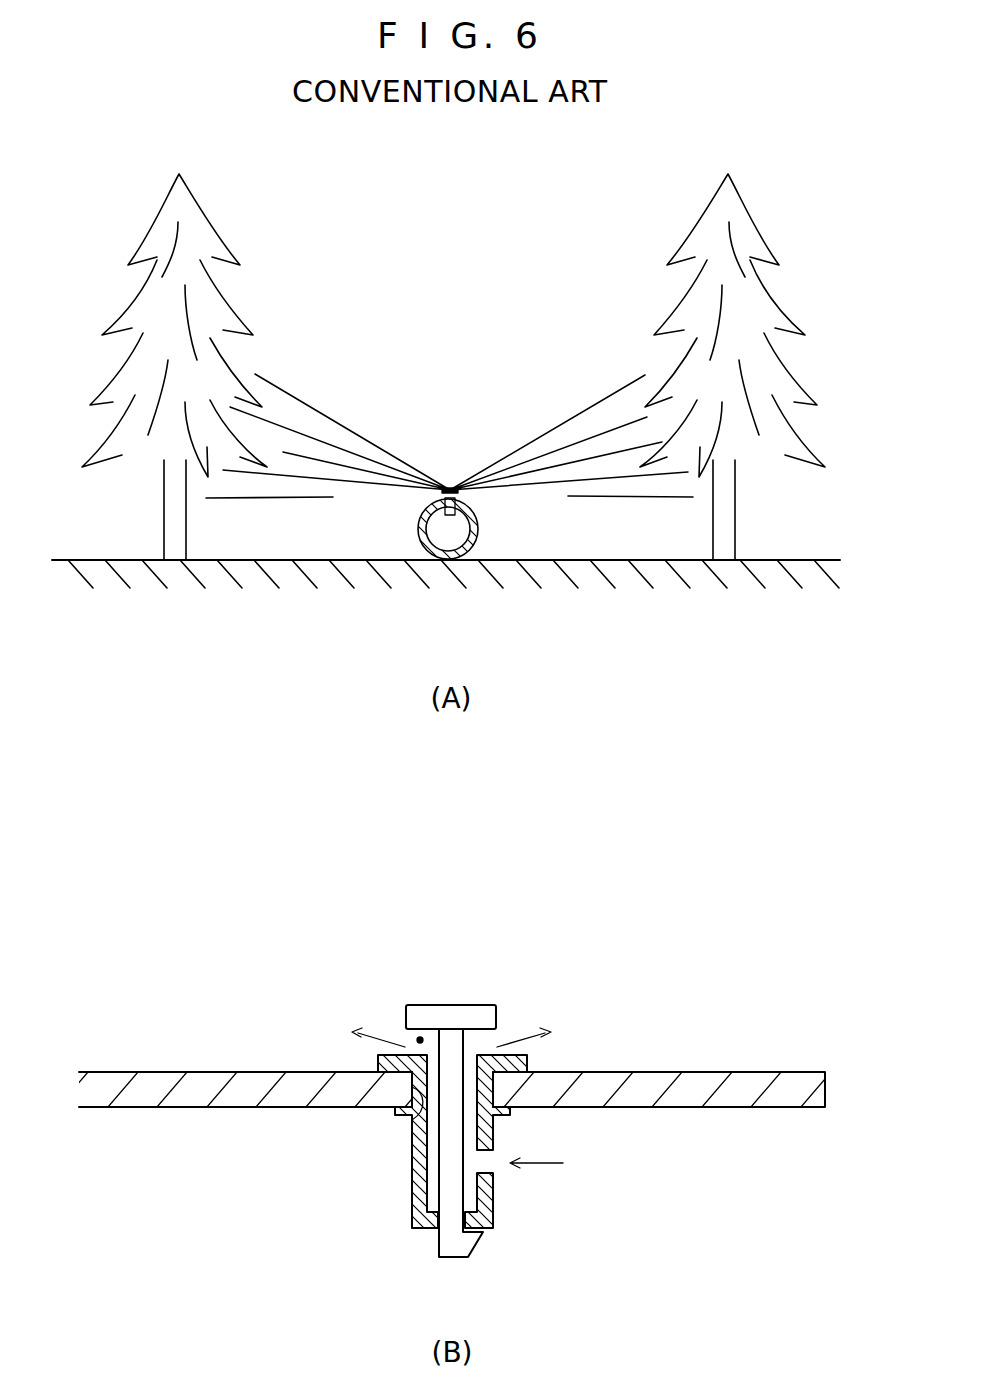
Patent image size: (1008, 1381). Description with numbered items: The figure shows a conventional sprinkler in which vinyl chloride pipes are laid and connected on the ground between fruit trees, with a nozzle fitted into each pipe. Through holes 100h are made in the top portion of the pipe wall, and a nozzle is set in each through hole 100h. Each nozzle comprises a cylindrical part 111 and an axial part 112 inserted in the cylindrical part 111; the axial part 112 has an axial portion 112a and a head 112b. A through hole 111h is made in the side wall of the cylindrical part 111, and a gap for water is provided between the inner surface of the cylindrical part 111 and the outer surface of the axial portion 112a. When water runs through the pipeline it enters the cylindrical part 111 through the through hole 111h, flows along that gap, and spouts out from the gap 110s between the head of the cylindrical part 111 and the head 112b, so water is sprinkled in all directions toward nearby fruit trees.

The through hole 100h is at (427, 1120).
The gap 110s is at (418, 1039).
The cylindrical part 111 is at (518, 1062).
The through hole 111h is at (483, 1157).
The axial part 112 is at (648, 910).
The axial portion 112a is at (453, 1042).
The head 112b is at (452, 1008).